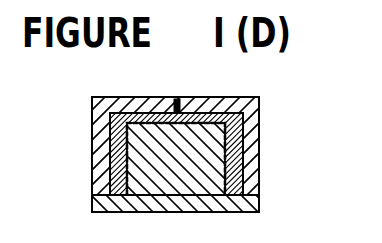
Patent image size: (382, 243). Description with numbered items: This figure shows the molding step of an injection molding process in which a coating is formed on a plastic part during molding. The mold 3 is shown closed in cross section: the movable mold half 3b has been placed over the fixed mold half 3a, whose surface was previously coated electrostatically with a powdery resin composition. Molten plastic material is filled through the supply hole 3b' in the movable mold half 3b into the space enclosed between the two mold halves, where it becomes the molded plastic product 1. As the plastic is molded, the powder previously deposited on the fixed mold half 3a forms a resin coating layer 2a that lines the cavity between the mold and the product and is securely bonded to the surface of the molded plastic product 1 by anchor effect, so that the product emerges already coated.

The molded plastic product 1 is at (236, 114).
The resin coating layer 2a is at (243, 161).
The mold 3 is at (88, 116).
The fixed mold half 3a is at (100, 205).
The movable mold half 3b is at (178, 153).
The supply hole 3b' is at (168, 87).